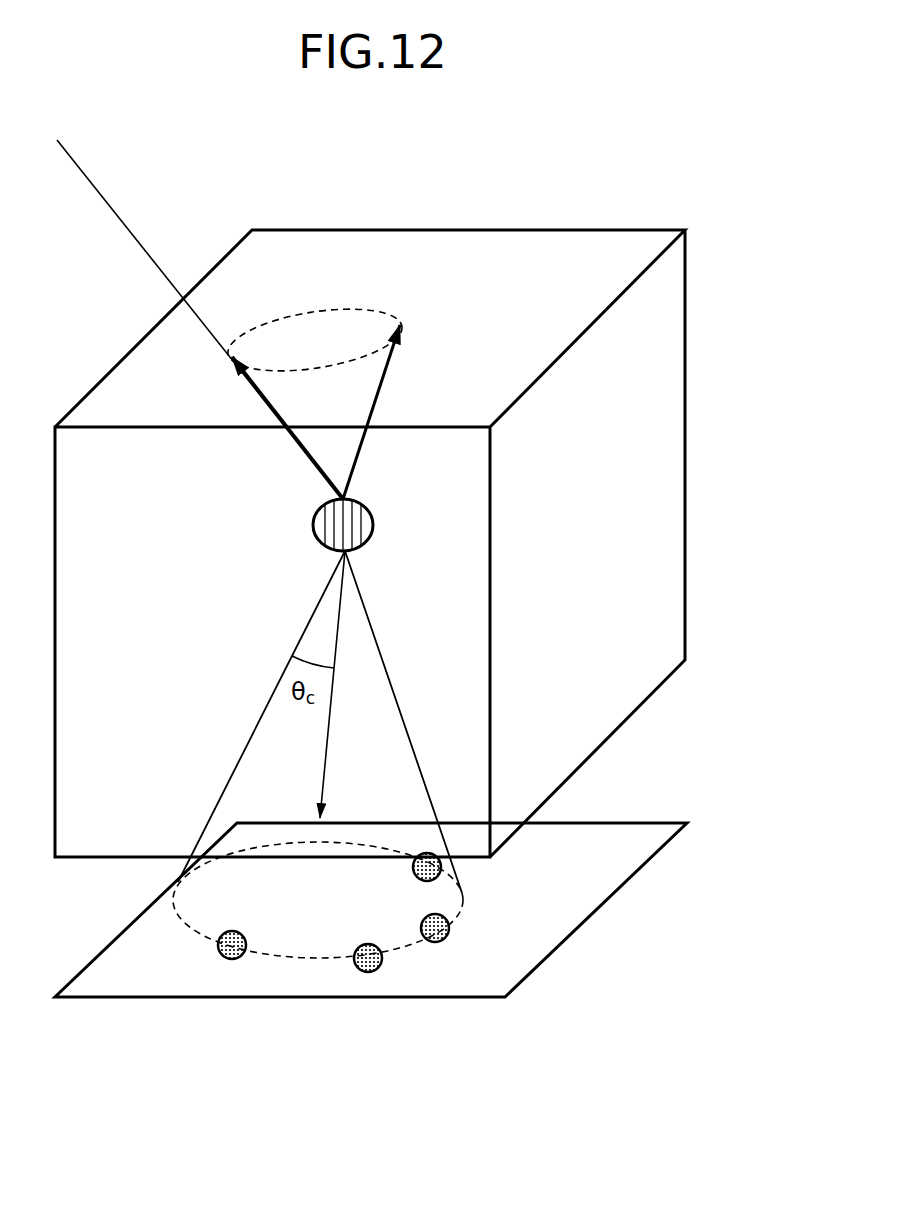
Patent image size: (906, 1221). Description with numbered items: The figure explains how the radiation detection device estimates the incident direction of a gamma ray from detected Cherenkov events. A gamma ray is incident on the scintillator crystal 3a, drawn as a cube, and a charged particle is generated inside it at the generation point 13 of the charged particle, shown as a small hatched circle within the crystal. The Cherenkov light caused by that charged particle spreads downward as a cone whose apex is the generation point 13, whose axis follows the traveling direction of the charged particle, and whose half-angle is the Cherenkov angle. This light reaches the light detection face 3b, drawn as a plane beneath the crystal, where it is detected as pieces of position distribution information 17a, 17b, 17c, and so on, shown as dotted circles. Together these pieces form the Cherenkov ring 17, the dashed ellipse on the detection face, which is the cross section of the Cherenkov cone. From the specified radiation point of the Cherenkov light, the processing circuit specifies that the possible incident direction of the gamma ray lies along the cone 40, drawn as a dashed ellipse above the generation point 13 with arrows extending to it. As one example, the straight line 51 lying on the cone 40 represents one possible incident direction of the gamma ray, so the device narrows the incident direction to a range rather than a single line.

The scintillator crystal 3a is at (686, 270).
The light detection face 3b is at (668, 848).
The generation point of the charged particle 13 is at (373, 523).
The straight line 51 is at (77, 163).
The cone 40 is at (320, 388).
The Cherenkov ring 17 is at (288, 958).
The position distribution information 17a is at (427, 881).
The position distribution information 17b is at (433, 942).
The position distribution information 17c is at (365, 972).